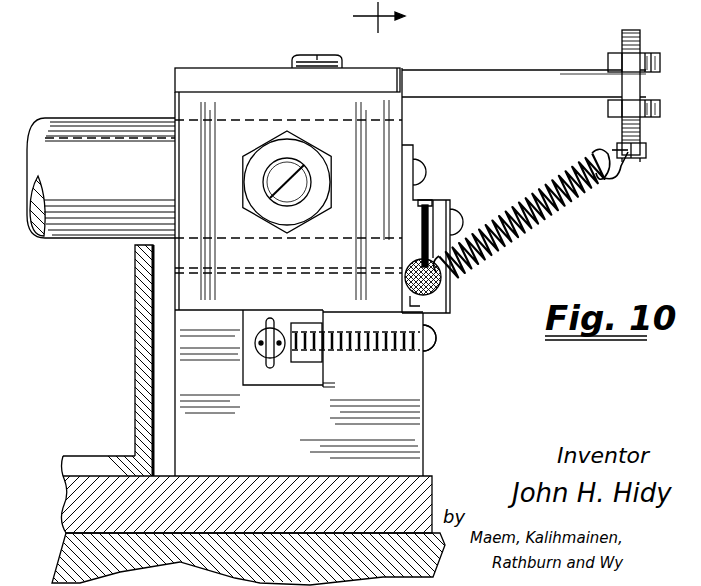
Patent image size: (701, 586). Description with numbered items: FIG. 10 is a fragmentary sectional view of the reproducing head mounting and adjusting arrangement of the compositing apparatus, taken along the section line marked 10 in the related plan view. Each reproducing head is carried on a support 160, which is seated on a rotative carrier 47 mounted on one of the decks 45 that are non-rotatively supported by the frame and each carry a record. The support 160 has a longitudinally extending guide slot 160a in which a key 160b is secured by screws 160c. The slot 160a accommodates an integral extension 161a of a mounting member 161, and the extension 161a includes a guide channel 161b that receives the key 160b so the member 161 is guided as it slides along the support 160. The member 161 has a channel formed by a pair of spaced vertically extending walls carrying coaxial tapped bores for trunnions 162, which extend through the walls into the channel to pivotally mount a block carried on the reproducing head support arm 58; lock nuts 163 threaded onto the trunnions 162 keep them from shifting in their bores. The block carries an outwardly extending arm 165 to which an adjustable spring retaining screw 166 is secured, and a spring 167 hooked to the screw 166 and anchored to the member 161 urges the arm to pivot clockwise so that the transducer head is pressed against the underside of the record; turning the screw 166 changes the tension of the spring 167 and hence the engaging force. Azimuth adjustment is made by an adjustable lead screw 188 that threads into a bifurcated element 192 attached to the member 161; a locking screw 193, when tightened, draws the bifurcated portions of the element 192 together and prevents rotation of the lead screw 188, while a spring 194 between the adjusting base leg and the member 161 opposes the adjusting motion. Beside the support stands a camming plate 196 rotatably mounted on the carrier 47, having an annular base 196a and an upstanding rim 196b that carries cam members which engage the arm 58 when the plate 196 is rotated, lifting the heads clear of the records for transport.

The spindle 10 is at (376, 16).
The reproducing head support arm 58 is at (100, 97).
The camming plate 196 is at (132, 382).
The annular base 196a is at (103, 457).
The upstanding rim 196b is at (134, 287).
The rotative carrier 47 is at (62, 492).
The deck 45 is at (63, 550).
The mounting member 161 is at (390, 141).
The lock nut 163 is at (306, 153).
The trunnion 162 is at (306, 187).
The outwardly extending arm 165 is at (548, 81).
The adjustable spring retaining screw 166 is at (642, 46).
The element 192 is at (438, 202).
The locking screw 193 is at (455, 218).
The adjustable lead screw 188 is at (448, 283).
The spring 167 is at (570, 207).
The support 160 is at (424, 391).
The guide slot 160a is at (324, 371).
The key 160b is at (309, 323).
The screw 160c is at (434, 342).
The integral extension 161a is at (290, 374).
The guide channel 161b is at (300, 322).
The spring 194 is at (262, 343).